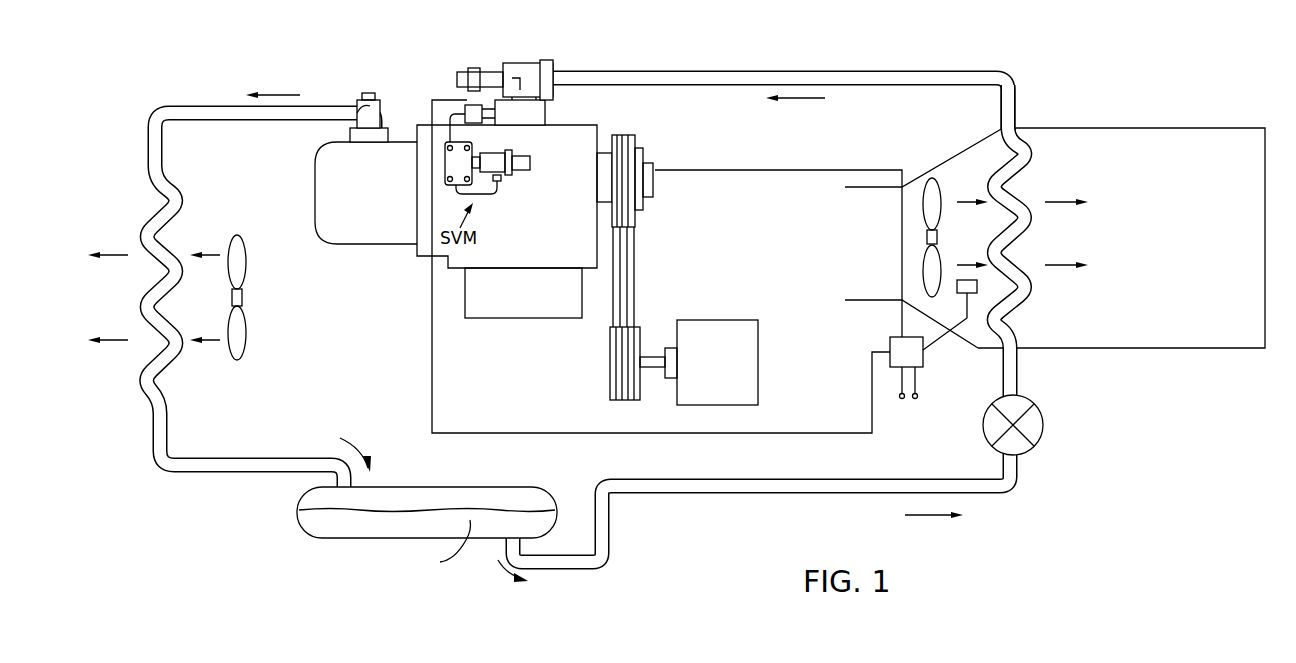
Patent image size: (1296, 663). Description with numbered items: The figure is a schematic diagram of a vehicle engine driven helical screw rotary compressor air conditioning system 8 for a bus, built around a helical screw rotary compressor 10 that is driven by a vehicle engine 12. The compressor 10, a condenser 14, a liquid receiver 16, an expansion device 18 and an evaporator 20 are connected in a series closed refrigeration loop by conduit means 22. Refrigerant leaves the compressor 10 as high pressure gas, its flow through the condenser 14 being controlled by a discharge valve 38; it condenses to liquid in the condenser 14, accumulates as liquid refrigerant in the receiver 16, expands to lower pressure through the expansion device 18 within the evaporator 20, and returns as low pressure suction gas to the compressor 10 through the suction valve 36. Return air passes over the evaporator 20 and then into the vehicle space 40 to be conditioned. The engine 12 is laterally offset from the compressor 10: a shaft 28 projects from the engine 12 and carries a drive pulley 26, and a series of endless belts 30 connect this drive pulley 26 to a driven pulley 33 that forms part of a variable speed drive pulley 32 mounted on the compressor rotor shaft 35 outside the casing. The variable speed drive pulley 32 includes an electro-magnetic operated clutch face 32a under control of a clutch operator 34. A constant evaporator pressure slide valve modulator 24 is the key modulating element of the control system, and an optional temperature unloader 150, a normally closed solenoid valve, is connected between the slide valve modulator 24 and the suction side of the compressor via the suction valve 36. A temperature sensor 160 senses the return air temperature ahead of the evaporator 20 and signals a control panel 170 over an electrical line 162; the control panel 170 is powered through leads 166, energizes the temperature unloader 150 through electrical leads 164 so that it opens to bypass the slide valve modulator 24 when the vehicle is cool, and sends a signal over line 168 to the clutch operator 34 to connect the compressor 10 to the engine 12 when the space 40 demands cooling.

The closed loop air conditioning system 8 is at (857, 38).
The helical screw rotary compressor 10 is at (415, 267).
The vehicle engine 12 is at (712, 320).
The condenser 14 is at (182, 370).
The liquid receiver 16 is at (458, 488).
The expansion device 18 is at (1043, 432).
The evaporator 20 is at (1036, 246).
The conduit means 22 is at (758, 70).
The constant evaporator pressure slide valve modulator 24 is at (496, 195).
The drive pulley 26 is at (610, 378).
The shaft 28 is at (660, 368).
The endless belts 30 is at (624, 292).
The variable speed drive pulley 32 is at (632, 173).
The electro-magnetic operated clutch face 32a is at (646, 228).
The driven pulley 33 is at (620, 135).
The clutch operator 34 is at (655, 200).
The compressor rotor shaft 35 is at (604, 198).
The suction valve 36 is at (550, 106).
The discharge valve 38 is at (375, 95).
The vehicle space 40 is at (1152, 129).
The temperature unloader 150 is at (466, 105).
The temperature sensor 160 is at (977, 286).
The electrical line 162 is at (946, 346).
The electrical leads 164 is at (432, 100).
The leads 166 is at (916, 404).
The line 168 is at (776, 170).
The control panel 170 is at (890, 342).